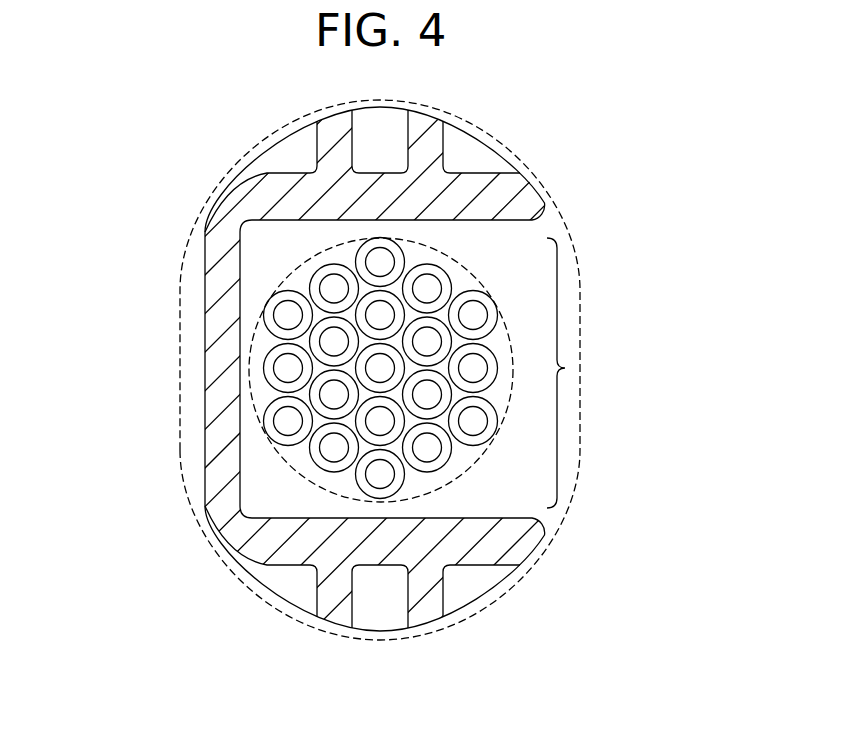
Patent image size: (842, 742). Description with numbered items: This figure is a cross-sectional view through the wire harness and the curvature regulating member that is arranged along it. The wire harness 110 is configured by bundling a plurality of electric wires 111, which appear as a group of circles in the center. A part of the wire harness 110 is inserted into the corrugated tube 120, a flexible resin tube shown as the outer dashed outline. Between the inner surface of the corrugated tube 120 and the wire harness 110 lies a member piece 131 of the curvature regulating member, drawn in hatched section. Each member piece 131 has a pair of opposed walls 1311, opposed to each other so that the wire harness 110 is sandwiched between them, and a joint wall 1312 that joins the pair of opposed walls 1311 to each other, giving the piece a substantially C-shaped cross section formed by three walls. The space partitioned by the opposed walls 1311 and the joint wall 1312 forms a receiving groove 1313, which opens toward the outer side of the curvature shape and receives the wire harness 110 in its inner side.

The wire harness 110 is at (283, 462).
The electric wire 111 is at (273, 300).
The corrugated tube 120 is at (177, 392).
The member piece 131 is at (156, 84).
The opposed wall 1311 is at (498, 142).
The joint wall 1312 is at (205, 352).
The receiving groove 1313 is at (565, 368).